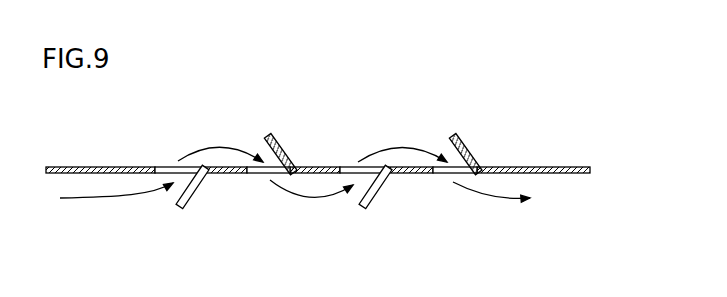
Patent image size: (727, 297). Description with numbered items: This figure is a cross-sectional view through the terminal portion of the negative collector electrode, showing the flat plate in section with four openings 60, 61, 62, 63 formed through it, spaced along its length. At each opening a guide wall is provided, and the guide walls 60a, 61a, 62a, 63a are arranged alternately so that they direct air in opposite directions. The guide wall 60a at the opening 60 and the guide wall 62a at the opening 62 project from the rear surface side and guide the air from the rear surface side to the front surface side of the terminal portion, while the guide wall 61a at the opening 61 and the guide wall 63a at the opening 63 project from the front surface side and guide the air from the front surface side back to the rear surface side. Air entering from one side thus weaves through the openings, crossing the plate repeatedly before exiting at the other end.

The opening 60 is at (163, 167).
The guide wall 60a is at (188, 201).
The opening 61 is at (252, 174).
The guide wall 61a is at (276, 137).
The opening 62 is at (346, 167).
The guide wall 62a is at (369, 203).
The opening 63 is at (437, 174).
The guide wall 63a is at (459, 137).